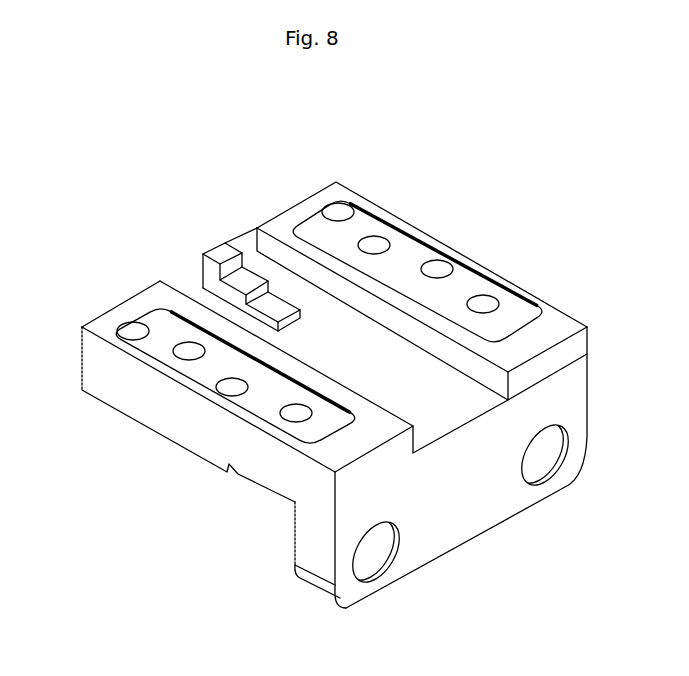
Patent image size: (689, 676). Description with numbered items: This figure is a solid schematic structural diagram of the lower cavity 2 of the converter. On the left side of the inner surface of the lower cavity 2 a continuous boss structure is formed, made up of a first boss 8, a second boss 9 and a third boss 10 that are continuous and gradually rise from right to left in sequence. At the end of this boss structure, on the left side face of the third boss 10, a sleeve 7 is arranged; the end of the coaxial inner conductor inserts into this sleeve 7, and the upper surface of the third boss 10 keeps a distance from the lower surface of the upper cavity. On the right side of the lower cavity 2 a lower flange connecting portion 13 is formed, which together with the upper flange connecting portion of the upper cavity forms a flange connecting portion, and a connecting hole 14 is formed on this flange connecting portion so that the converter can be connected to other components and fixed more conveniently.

The lower cavity 2 is at (460, 283).
The sleeve 7 is at (212, 248).
The first boss 8 is at (267, 307).
The second boss 9 is at (240, 281).
The third boss 10 is at (203, 257).
The lower flange connecting portion 13 is at (444, 513).
The connecting hole 14 is at (537, 457).